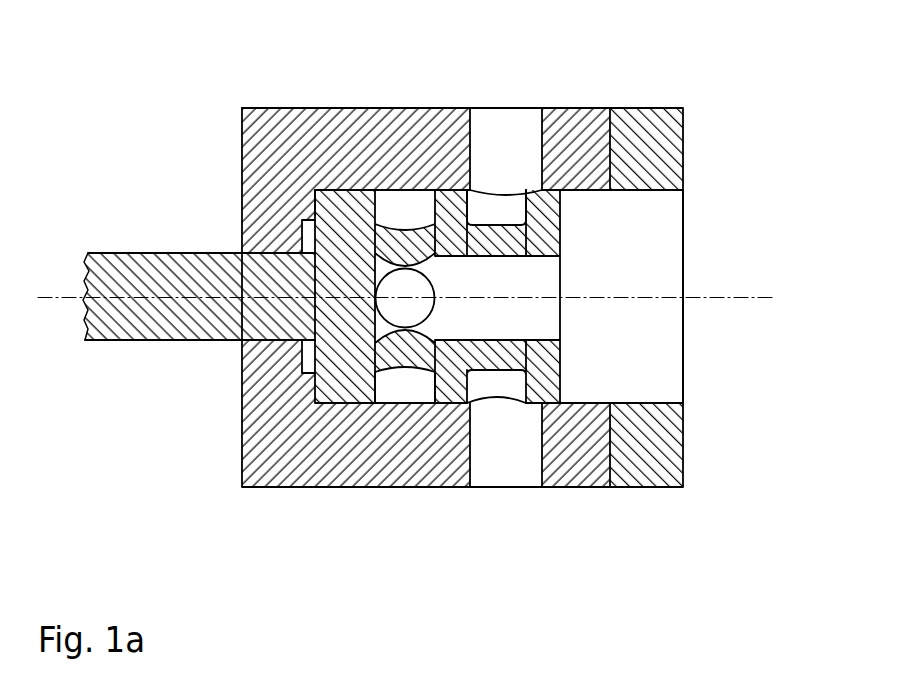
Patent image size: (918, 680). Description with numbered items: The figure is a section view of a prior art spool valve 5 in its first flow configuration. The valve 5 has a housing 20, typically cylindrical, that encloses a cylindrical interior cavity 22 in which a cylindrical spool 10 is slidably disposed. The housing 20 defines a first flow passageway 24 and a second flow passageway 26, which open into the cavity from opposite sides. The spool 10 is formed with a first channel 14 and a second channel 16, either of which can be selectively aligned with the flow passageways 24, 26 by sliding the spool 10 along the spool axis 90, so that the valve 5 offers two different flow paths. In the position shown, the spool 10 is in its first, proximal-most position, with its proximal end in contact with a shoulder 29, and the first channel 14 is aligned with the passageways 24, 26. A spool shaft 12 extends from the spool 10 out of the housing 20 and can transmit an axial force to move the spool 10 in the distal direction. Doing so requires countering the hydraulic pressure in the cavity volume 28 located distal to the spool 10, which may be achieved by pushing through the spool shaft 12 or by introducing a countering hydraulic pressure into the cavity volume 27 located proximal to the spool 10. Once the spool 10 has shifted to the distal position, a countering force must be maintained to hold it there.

The spool valve 5 is at (162, 121).
The spool 10 is at (560, 233).
The spool shaft 12 is at (137, 342).
The first channel 14 is at (485, 394).
The second channel 16 is at (393, 395).
The housing 20 is at (285, 487).
The interior cavity 22 is at (665, 312).
The first flow passageway 24 is at (513, 460).
The second flow passageway 26 is at (505, 130).
The cavity volume proximal to the spool 27 is at (307, 236).
The cavity volume distal to the spool 28 is at (618, 360).
The shoulder 29 is at (318, 205).
The spool axis 90 is at (56, 298).